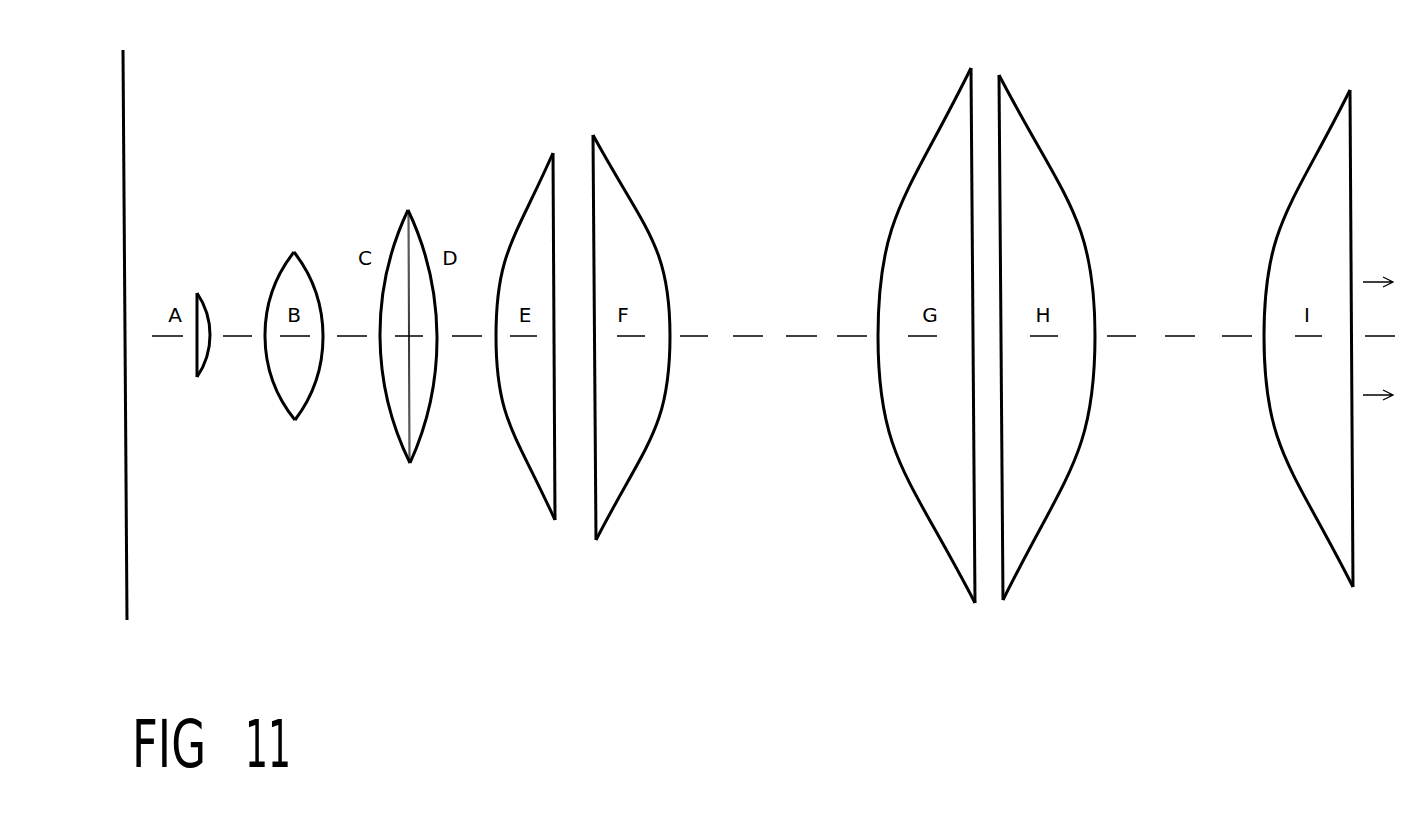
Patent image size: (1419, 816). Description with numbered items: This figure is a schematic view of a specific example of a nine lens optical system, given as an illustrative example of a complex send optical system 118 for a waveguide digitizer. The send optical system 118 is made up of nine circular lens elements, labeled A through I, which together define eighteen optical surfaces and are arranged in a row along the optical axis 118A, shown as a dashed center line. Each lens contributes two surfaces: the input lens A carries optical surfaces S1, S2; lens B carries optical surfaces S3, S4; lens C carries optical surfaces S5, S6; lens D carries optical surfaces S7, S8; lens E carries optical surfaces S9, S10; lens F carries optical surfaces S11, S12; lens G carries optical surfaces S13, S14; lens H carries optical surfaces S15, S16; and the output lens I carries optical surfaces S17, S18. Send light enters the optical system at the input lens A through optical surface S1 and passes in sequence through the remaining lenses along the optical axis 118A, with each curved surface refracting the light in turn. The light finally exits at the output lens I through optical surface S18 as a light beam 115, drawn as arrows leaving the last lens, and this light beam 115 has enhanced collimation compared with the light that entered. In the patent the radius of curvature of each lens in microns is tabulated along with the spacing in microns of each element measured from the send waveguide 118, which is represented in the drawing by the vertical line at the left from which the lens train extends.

The send optical system 118 is at (124, 193).
The optical axis 118A is at (733, 334).
The light beam 115 is at (1383, 278).
The optical surface S1 is at (195, 353).
The optical surface S2 is at (200, 355).
The optical surface S3 is at (285, 402).
The optical surface S4 is at (310, 395).
The optical surface S5 is at (392, 418).
The optical surface S6 is at (407, 426).
The optical surface S7 is at (413, 426).
The optical surface S8 is at (427, 420).
The optical surface S9 is at (540, 495).
The optical surface S10 is at (562, 488).
The optical surface S11 is at (623, 495).
The optical surface S12 is at (591, 493).
The optical surface S13 is at (947, 562).
The optical surface S14 is at (977, 573).
The optical surface S15 is at (998, 573).
The optical surface S16 is at (1028, 562).
The optical surface S17 is at (1328, 550).
The optical surface S18 is at (1358, 550).